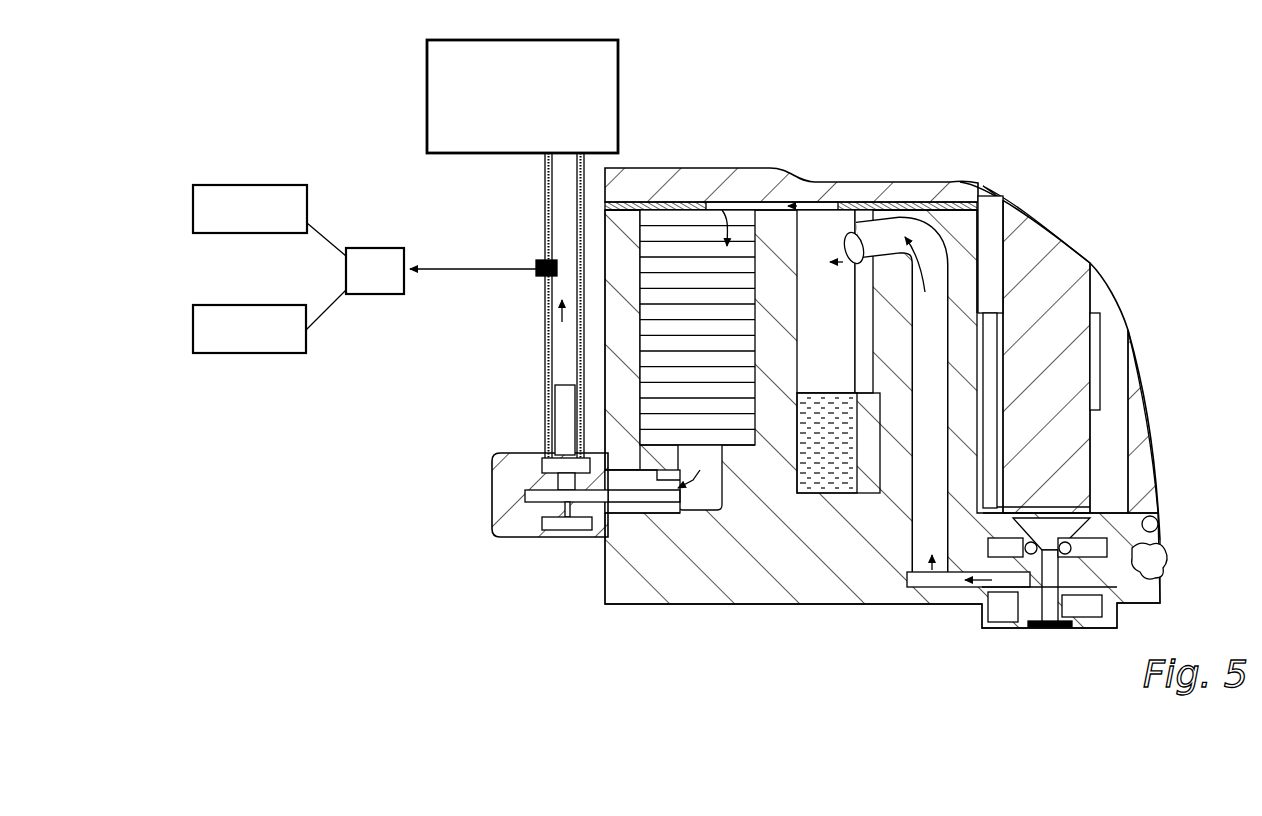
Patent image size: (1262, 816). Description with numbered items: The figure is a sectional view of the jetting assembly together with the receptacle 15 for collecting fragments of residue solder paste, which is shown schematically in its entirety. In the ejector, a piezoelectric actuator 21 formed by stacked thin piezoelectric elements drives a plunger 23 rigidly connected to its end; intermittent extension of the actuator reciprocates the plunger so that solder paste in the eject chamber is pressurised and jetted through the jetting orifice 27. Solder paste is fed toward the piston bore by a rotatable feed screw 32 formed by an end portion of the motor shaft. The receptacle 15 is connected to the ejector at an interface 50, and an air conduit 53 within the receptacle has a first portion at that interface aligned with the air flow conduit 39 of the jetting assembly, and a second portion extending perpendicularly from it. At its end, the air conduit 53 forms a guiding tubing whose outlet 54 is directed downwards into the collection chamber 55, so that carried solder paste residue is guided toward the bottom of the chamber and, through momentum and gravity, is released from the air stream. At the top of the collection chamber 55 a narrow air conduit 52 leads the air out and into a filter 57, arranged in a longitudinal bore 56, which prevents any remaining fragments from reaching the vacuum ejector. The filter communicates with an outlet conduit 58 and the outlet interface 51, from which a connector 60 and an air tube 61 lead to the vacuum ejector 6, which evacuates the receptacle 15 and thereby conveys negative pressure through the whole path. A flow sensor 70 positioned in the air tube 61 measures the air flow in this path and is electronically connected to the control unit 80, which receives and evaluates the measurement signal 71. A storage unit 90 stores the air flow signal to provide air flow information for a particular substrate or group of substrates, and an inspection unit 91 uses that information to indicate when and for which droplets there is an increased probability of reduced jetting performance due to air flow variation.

The vacuum ejector 6 is at (675, 76).
The receptacle 15 is at (590, 614).
The piezoelectric actuator 21 is at (1073, 282).
The plunger 23 is at (1125, 520).
The jetting orifice 27 is at (1045, 628).
The rotatable feed screw 32 is at (1150, 562).
The air flow conduit 39 is at (1000, 597).
The interface 50 is at (990, 582).
The interface 51 is at (640, 500).
The narrow air conduit 52 is at (818, 212).
The air conduit 53 is at (935, 320).
The outlet 54 is at (890, 238).
The collection chamber 55 is at (825, 462).
The longitudinal bore 56 is at (648, 334).
The filter 57 is at (695, 270).
The outlet conduit 58 is at (700, 470).
The connector 60 is at (468, 485).
The air tube 61 is at (548, 181).
The flow sensor 70 is at (540, 278).
The measurement signal 71 is at (445, 267).
The control unit 80 is at (372, 256).
The storage unit 90 is at (193, 210).
The inspection unit 91 is at (193, 336).